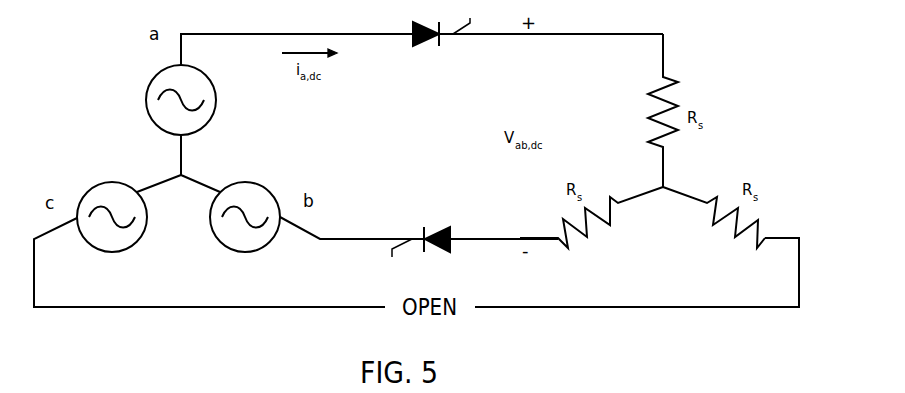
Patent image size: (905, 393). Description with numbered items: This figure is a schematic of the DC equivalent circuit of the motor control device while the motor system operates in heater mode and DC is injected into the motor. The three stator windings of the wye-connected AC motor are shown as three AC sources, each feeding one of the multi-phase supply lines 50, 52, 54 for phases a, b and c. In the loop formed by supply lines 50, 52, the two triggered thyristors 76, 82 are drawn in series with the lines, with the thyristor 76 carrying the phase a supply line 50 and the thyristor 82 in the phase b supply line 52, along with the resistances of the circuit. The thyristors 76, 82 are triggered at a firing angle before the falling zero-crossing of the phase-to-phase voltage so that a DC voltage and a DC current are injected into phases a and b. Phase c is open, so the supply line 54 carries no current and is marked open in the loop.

The multi-phase supply line 50 is at (243, 34).
The multi-phase supply line 52 is at (335, 239).
The multi-phase supply line 54 is at (170, 306).
The thyristor 76 is at (427, 43).
The thyristor 82 is at (440, 227).